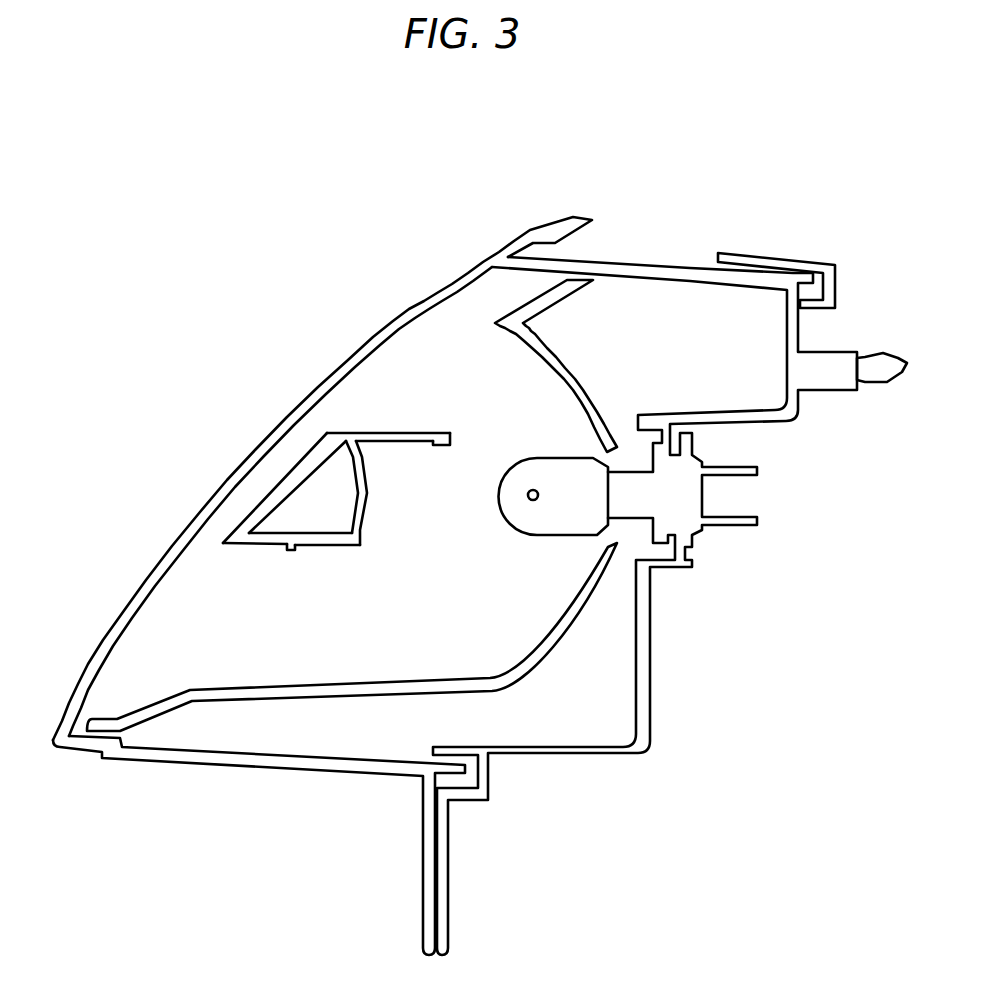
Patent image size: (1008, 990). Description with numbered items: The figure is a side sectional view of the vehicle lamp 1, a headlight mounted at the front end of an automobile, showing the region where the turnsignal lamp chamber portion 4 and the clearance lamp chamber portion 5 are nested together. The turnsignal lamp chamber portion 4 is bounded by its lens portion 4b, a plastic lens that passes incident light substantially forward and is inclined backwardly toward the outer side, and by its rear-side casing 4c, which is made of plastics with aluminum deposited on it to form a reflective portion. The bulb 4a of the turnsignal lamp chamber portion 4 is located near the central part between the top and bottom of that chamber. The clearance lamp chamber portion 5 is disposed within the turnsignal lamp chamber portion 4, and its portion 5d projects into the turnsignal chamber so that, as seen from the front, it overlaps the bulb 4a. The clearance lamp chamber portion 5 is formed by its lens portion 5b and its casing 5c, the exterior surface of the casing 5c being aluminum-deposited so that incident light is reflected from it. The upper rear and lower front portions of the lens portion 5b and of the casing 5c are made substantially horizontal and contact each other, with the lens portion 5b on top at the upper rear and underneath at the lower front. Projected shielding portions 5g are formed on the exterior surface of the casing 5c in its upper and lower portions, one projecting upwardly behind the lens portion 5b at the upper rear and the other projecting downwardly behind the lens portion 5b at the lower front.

The vehicle lamp 1 is at (700, 192).
The turnsignal lamp chamber portion 4 is at (498, 642).
The bulb 4a is at (555, 518).
The lens portion 4b is at (435, 296).
The casing 4c is at (277, 692).
The clearance lamp chamber portion 5 is at (318, 488).
The lens portion 5b is at (263, 498).
The casing 5c is at (365, 522).
The portion 5d is at (247, 523).
The projected shielding portion 5g is at (446, 432).